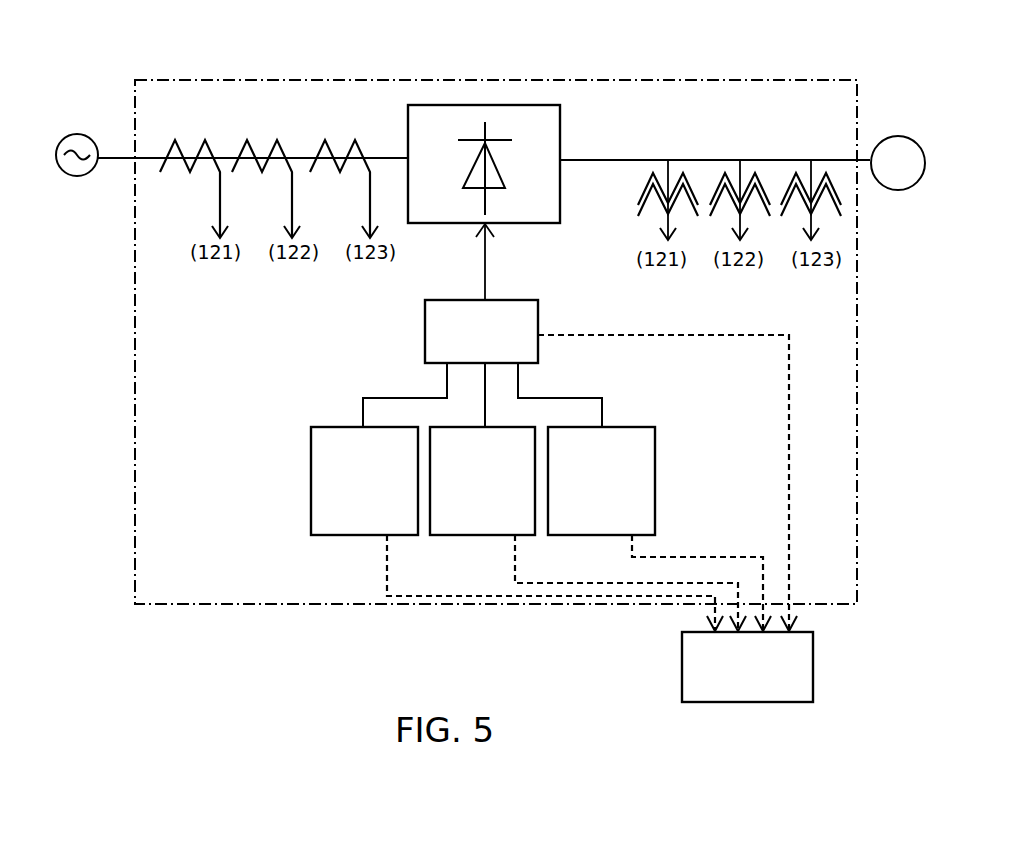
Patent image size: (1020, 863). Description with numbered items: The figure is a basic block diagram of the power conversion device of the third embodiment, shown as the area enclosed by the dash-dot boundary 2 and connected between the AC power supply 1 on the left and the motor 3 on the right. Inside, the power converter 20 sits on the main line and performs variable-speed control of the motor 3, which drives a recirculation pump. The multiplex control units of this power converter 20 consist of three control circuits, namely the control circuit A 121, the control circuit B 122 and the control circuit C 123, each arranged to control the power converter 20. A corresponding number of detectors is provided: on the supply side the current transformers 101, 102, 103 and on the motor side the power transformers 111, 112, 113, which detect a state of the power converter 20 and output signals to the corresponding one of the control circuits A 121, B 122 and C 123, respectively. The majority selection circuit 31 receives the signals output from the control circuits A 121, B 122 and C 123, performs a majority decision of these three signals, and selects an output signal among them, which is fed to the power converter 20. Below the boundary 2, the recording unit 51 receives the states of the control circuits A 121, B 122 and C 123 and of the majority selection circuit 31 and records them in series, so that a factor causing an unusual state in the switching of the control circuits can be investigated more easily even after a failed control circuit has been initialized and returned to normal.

The AC power supply 1 is at (80, 134).
The power converter apparatus 2 is at (700, 80).
The motor 3 is at (895, 136).
The power converter 20 is at (540, 105).
The majority selection circuit 31 is at (528, 318).
The recording unit 51 is at (682, 669).
The current transformer 101 is at (190, 146).
The current transformer 102 is at (263, 146).
The current transformer 103 is at (338, 146).
The power transformer 111 is at (642, 182).
The power transformer 112 is at (712, 182).
The power transformer 113 is at (782, 182).
The control circuit A 121 is at (372, 535).
The control circuit B 122 is at (494, 535).
The control circuit C 123 is at (573, 535).